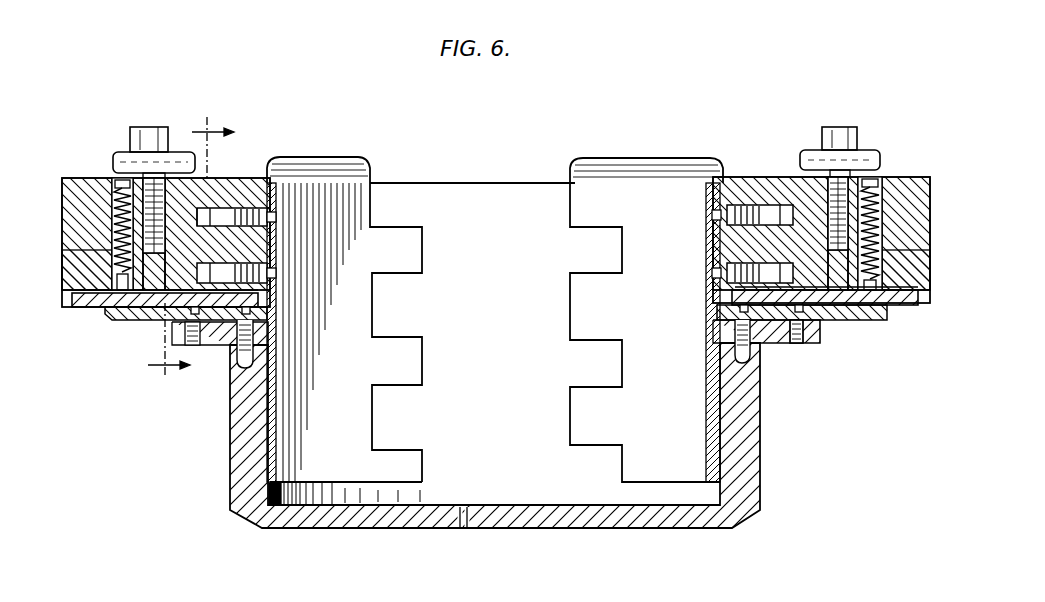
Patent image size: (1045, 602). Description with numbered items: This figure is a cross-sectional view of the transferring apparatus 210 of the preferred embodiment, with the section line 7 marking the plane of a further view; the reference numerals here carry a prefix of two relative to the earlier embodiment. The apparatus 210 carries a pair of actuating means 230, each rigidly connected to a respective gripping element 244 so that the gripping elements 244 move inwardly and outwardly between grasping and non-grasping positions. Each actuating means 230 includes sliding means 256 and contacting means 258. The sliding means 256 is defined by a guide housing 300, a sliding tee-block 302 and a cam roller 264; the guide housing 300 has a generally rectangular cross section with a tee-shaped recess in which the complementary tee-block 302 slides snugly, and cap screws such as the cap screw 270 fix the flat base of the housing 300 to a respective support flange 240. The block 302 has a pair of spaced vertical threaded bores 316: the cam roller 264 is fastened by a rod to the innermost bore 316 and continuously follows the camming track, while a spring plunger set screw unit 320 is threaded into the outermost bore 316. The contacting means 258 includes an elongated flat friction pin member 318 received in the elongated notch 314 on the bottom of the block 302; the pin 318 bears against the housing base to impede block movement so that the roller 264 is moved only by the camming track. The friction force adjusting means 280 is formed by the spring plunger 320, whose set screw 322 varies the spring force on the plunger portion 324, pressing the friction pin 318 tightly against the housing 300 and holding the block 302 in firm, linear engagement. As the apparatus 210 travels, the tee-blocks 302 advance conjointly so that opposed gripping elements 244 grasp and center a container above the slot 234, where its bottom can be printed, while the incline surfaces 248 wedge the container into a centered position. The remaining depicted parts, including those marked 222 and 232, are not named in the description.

The transferring apparatus 210 is at (716, 95).
The liner 222 is at (759, 347).
The actuating means 230 is at (110, 150).
The housing wall 232 is at (752, 455).
The slot 234 is at (533, 510).
The support flange 240 is at (218, 347).
The gripping element 244 is at (304, 160).
The incline surface 248 is at (360, 192).
The sliding means 256 is at (53, 298).
The contacting means 258 is at (58, 224).
The cam roller 264 is at (178, 150).
The cap screw 270 is at (797, 345).
The friction force adjusting means 280 is at (118, 188).
The guide housing 300 is at (115, 302).
The sliding tee-block 302 is at (82, 190).
The elongated notch 314 is at (80, 288).
The vertical threaded bore 316 is at (112, 231).
The friction pin member 318 is at (145, 307).
The spring plunger set screw unit 320 is at (120, 270).
The set screw 322 is at (125, 182).
The plunger portion 324 is at (117, 297).
The section line 7- 7 is at (198, 251).